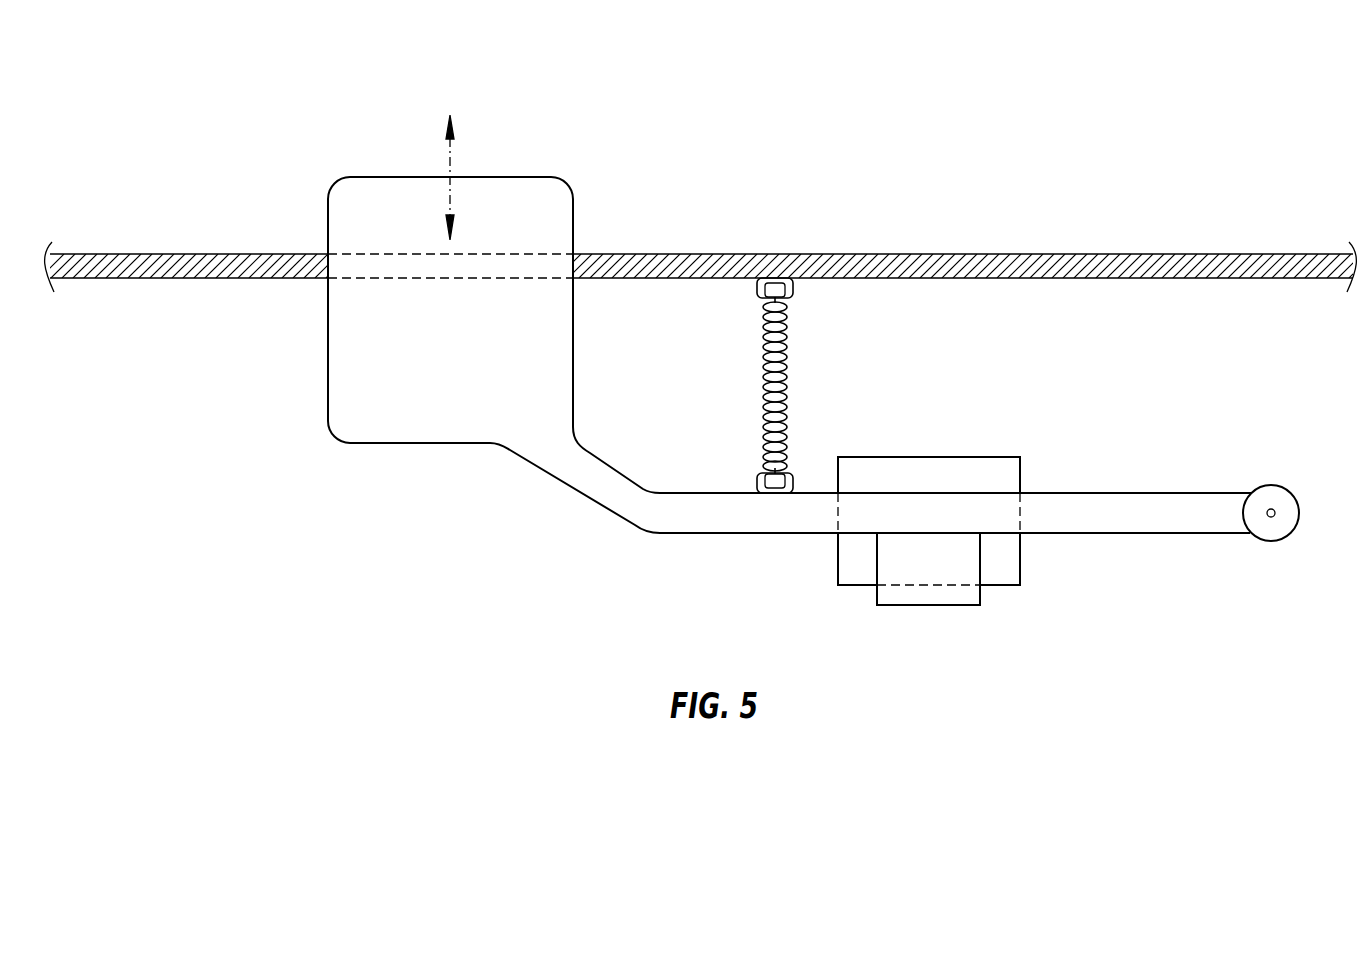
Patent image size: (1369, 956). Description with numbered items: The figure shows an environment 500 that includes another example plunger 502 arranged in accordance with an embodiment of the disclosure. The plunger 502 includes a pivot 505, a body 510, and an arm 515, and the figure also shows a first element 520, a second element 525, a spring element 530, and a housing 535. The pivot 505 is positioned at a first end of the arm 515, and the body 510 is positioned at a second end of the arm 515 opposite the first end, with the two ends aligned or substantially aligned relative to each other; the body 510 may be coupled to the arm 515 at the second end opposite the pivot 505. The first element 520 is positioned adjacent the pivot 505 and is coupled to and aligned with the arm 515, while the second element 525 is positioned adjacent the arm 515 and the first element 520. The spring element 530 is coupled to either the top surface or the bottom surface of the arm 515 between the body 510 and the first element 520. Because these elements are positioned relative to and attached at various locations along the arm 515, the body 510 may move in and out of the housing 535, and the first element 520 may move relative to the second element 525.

The environment 500 is at (1263, 73).
The plunger 502 is at (455, 546).
The pivot 505 is at (1285, 487).
The body 510 is at (497, 177).
The arm 515 is at (620, 520).
The first element 520 is at (980, 595).
The second element 525 is at (1020, 557).
The spring element 530 is at (787, 390).
The housing 535 is at (248, 254).